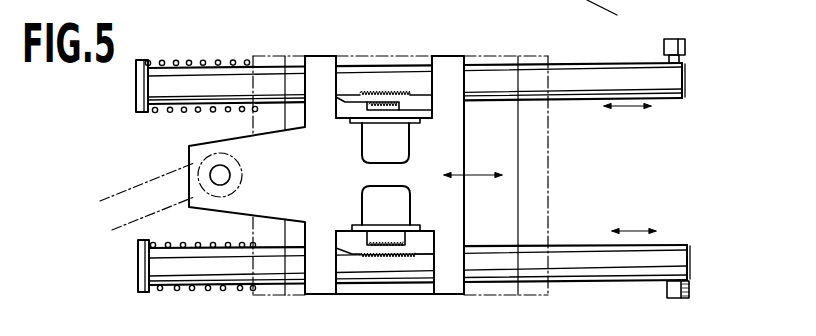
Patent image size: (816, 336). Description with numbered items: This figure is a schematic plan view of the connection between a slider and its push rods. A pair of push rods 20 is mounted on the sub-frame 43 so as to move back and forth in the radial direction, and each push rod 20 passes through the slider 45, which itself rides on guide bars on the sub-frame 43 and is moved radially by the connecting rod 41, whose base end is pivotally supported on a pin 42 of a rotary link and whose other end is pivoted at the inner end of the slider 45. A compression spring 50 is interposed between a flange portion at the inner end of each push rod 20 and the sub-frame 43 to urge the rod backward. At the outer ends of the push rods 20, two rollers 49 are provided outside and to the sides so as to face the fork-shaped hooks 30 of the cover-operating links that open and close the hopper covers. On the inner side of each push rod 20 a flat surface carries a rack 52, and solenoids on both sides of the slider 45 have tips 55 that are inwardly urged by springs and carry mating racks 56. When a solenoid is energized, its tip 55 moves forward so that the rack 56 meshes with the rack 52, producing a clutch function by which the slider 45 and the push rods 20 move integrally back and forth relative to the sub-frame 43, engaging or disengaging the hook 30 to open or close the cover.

The push rod 20 is at (589, 86).
The fork-shaped hook 30 is at (280, 315).
The connecting rod 41 is at (122, 200).
The pin 42 is at (233, 0).
The sub-frame 43 is at (551, 185).
The slider 45 is at (449, 143).
The roller 49 is at (690, 290).
The compression spring 50 is at (188, 62).
The rack 52 is at (398, 93).
The tip 55 is at (398, 107).
The rack 56 is at (392, 237).